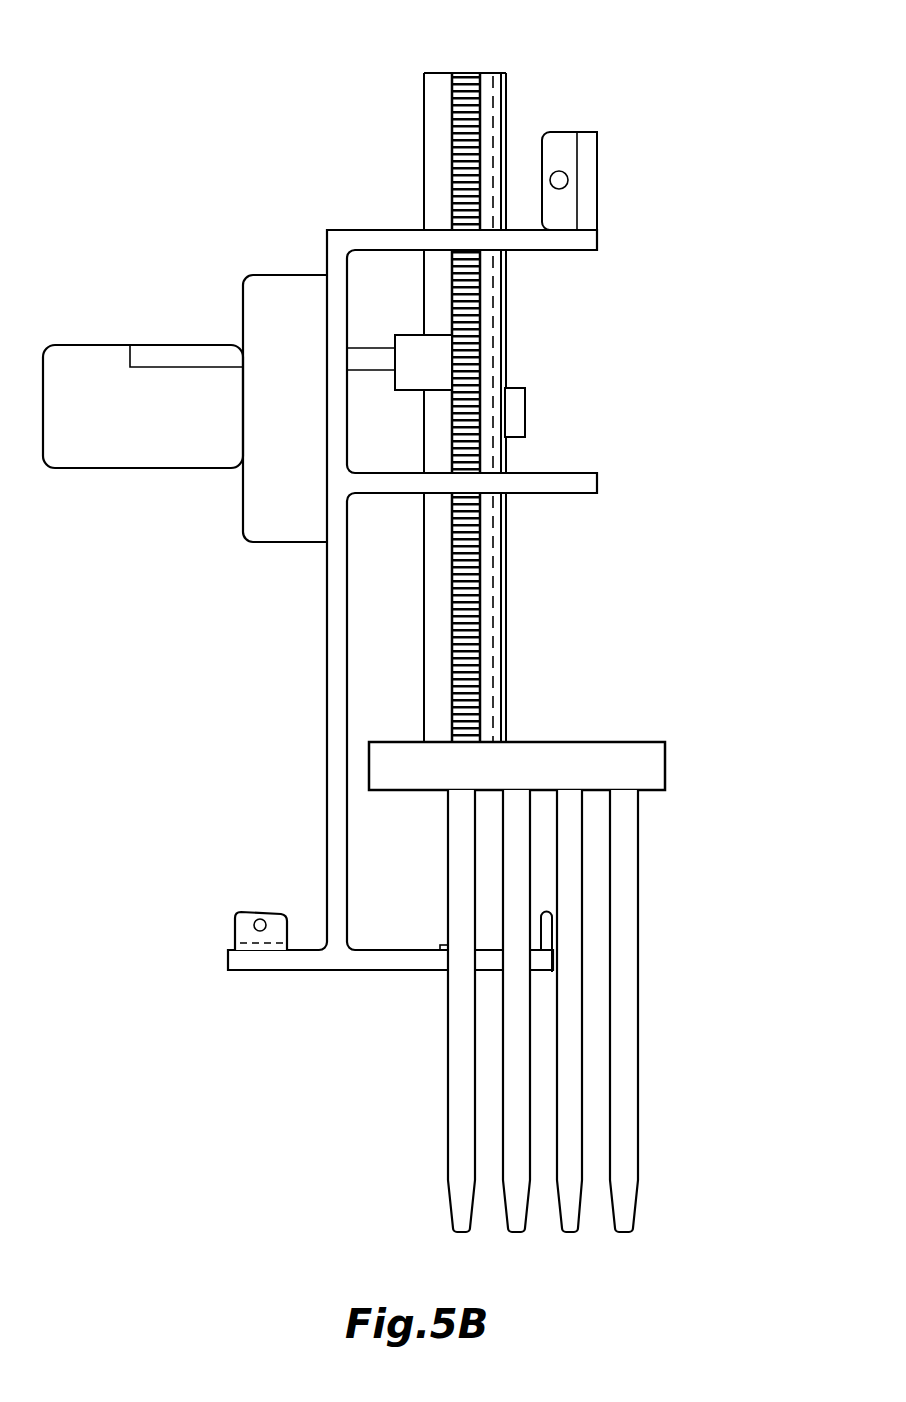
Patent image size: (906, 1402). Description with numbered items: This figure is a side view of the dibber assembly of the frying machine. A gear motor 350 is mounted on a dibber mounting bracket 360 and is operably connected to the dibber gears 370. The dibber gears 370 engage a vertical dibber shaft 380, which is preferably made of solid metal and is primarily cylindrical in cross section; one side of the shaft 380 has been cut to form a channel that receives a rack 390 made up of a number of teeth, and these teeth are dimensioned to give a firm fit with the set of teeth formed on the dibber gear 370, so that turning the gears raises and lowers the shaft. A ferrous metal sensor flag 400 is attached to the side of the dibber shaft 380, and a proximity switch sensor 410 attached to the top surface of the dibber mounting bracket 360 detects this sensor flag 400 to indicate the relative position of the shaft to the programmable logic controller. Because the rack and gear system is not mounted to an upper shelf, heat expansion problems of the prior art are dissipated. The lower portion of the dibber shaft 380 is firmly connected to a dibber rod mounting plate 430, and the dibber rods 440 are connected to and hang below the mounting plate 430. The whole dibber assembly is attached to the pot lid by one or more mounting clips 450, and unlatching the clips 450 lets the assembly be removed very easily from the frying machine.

The gear motor 350 is at (158, 452).
The dibber mounting bracket 360 is at (345, 237).
The dibber gears 370 is at (455, 347).
The dibber shaft 380 is at (497, 90).
The rack 390 is at (452, 96).
The sensor flag 400 is at (510, 418).
The proximity switch sensor 410 is at (590, 183).
The dibber rod mounting plate 430 is at (612, 752).
The dibber rods 440 is at (617, 1017).
The mounting clips 450 is at (247, 918).